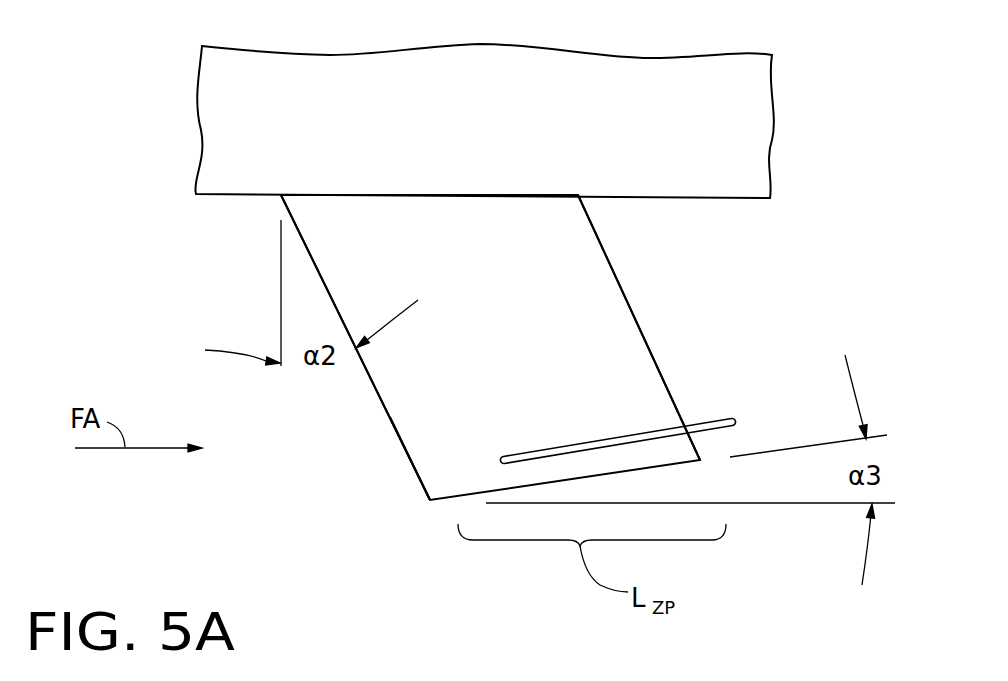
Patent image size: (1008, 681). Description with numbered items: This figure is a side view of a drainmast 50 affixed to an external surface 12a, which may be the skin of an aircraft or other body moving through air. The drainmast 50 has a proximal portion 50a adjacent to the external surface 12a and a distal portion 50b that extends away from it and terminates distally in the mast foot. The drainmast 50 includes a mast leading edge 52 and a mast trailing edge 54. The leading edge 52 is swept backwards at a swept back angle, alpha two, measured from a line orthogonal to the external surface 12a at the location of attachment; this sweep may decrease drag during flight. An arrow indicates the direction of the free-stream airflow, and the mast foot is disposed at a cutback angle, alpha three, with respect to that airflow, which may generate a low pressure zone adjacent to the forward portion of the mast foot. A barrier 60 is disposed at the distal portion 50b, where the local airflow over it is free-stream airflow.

The external surface 12a is at (233, 201).
The drainmast 50 is at (527, 364).
The proximal portion 50a is at (560, 212).
The distal portion 50b is at (418, 459).
The mast leading edge 52 is at (374, 418).
The mast trailing edge 54 is at (684, 316).
The barrier 60 is at (682, 401).